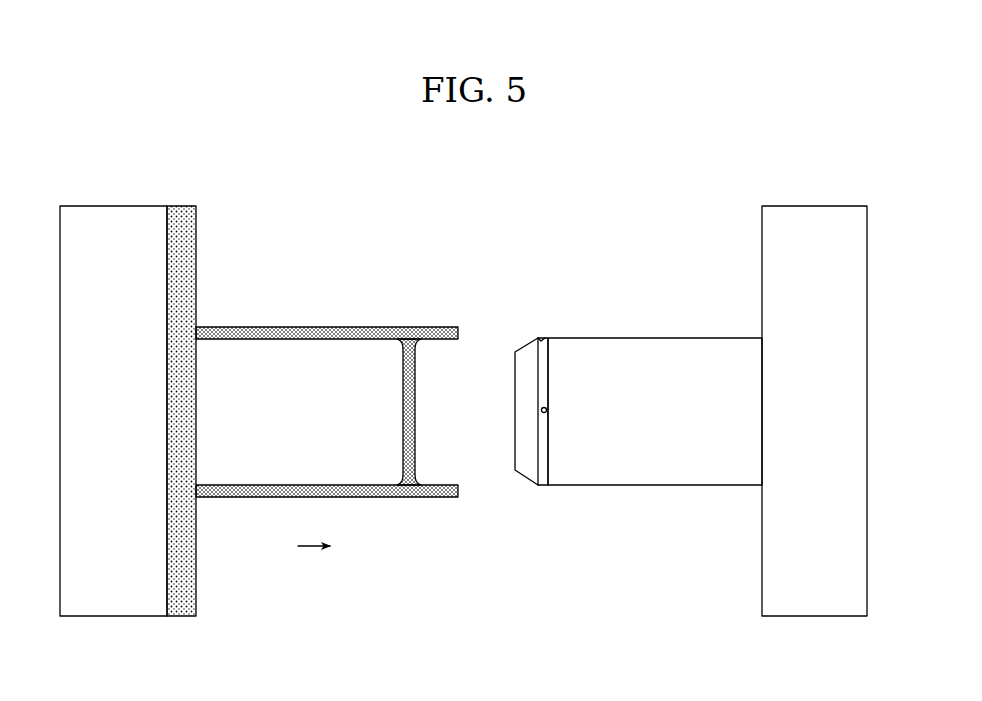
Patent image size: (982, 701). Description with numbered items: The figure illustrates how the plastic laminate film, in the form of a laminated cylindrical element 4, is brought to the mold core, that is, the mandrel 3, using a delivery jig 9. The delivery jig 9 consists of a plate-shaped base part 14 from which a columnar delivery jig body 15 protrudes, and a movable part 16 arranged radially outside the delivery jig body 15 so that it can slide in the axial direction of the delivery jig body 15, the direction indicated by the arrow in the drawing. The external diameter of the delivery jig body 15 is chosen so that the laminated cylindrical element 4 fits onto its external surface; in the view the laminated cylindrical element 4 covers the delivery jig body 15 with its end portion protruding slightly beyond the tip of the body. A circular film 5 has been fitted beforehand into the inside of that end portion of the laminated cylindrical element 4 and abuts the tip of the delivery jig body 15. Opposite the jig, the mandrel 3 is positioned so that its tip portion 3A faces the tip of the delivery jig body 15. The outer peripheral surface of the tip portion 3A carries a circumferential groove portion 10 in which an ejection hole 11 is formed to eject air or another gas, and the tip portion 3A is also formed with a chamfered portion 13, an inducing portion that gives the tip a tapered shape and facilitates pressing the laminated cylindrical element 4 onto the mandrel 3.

The mandrel 3 is at (681, 394).
The tip portion 3A is at (538, 508).
The laminated cylindrical element 4 is at (386, 330).
The circular film 5 is at (417, 446).
The delivery jig 9 is at (330, 375).
The groove portion 10 is at (543, 368).
The ejection hole 11 is at (547, 410).
The chamfered portion 13 is at (522, 343).
The base part 14 is at (117, 213).
The delivery jig body 15 is at (323, 367).
The movable part 16 is at (182, 215).